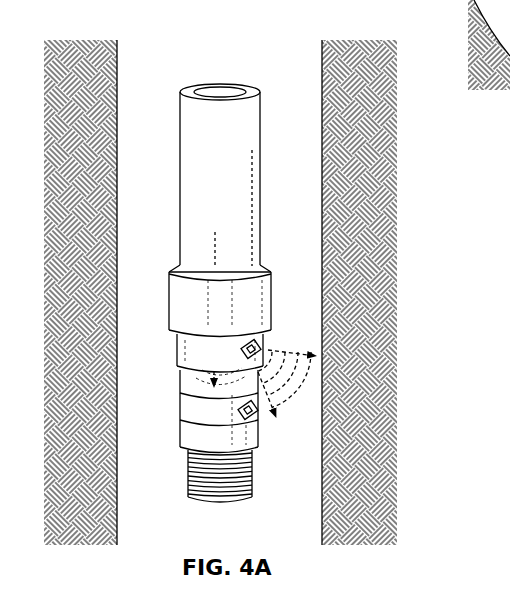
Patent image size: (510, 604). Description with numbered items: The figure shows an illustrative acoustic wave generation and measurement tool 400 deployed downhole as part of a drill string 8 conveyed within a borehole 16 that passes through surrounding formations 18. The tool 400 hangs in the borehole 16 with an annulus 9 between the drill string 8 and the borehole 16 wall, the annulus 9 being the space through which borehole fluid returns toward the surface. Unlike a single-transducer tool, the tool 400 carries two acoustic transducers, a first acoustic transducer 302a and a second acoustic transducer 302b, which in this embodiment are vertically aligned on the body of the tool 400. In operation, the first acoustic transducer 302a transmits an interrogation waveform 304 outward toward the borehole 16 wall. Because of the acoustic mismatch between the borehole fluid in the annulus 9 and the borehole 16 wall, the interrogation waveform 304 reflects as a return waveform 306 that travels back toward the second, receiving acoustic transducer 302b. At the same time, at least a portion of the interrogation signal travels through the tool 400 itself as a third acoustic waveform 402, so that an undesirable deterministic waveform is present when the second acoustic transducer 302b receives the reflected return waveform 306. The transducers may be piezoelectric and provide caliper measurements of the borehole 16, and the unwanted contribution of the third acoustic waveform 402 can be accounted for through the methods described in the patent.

The acoustic wave generation and measurement tool 400 is at (191, 253).
The drill string 8 is at (180, 118).
The borehole 16 is at (322, 106).
The annulus 9 is at (300, 168).
The formations 18 is at (388, 192).
The first acoustic transducer 302a is at (247, 342).
The second acoustic transducer 302b is at (243, 415).
The interrogation waveform 304 is at (286, 347).
The return waveform 306 is at (290, 406).
The third acoustic waveform 402 is at (200, 380).